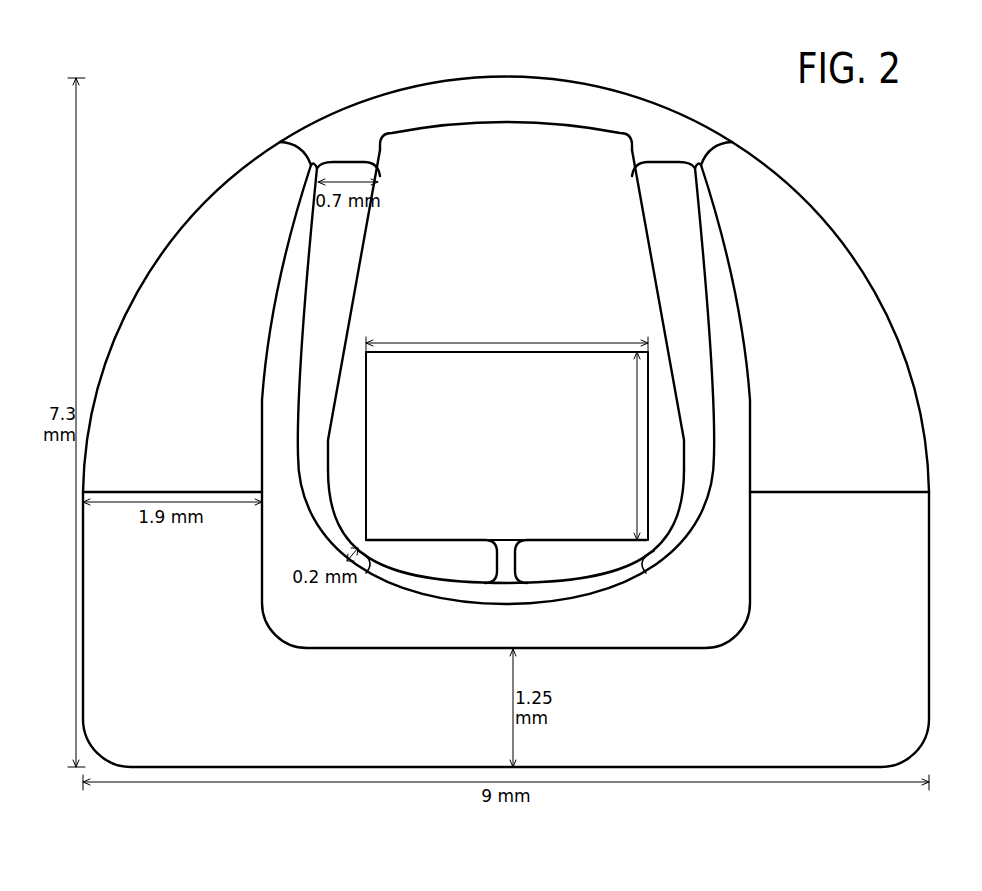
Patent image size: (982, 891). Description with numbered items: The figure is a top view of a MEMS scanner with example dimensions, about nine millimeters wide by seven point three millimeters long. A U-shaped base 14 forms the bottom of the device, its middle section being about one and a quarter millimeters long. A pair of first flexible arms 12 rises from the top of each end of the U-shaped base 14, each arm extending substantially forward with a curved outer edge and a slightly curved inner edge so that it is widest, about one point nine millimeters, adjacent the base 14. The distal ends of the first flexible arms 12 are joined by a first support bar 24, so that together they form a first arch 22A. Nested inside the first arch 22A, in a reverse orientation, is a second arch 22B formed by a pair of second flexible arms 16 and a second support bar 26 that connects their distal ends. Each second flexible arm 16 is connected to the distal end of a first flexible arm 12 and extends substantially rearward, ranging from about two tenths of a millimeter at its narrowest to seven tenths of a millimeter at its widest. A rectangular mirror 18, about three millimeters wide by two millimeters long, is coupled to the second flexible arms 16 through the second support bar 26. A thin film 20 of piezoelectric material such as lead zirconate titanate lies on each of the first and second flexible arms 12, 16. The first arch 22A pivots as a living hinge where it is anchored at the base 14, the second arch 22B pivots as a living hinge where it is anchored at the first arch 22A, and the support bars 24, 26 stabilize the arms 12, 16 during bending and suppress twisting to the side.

The first flexible arm 12 is at (173, 237).
The base 14 is at (308, 647).
The second flexible arm 16 is at (377, 242).
The mirror 18 is at (493, 458).
The thin film 20 is at (180, 365).
The first arch 22A is at (509, 61).
The second arch 22B is at (569, 611).
The first support bar 24 is at (510, 124).
The second support bar 26 is at (507, 605).